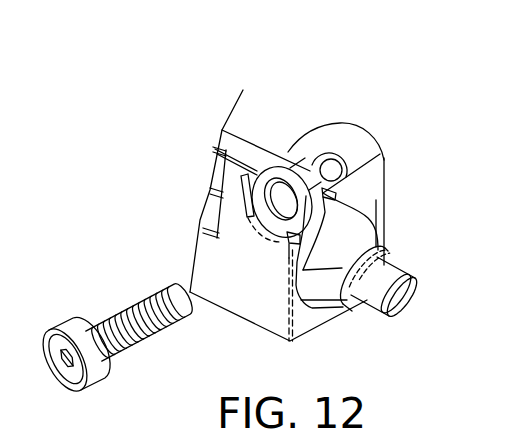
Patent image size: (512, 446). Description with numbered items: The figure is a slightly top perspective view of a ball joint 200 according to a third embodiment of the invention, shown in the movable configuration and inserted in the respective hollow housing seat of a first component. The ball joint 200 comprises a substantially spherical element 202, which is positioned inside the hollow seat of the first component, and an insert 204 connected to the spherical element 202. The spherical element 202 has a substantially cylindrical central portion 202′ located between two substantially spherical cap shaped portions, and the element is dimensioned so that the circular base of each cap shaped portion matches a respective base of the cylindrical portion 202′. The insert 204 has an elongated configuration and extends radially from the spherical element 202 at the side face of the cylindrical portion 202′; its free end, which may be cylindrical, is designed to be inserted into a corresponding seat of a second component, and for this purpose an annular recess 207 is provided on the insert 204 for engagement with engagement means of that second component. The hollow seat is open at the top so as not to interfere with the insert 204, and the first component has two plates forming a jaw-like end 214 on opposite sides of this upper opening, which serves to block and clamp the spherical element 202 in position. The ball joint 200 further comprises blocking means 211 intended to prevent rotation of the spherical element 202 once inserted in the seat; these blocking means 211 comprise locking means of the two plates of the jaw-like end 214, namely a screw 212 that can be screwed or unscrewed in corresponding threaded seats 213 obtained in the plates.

The ball joint 200 is at (413, 122).
The spherical element 202 is at (396, 247).
The substantially cylindrical central portion 202′ is at (311, 288).
The insert 204 is at (363, 303).
The annular recess 207 is at (400, 278).
The blocking means 211 is at (158, 209).
The screw 212 is at (123, 300).
The threaded seats 213 is at (326, 172).
The jaw-like end 214 is at (358, 118).